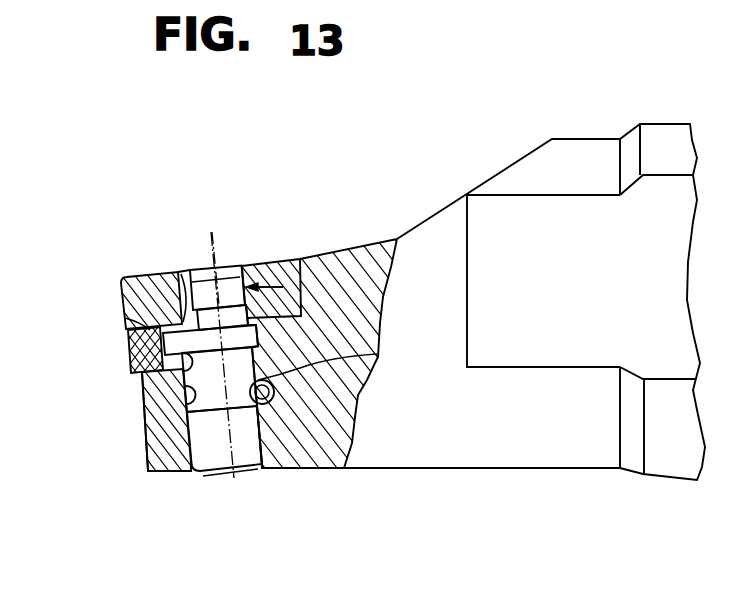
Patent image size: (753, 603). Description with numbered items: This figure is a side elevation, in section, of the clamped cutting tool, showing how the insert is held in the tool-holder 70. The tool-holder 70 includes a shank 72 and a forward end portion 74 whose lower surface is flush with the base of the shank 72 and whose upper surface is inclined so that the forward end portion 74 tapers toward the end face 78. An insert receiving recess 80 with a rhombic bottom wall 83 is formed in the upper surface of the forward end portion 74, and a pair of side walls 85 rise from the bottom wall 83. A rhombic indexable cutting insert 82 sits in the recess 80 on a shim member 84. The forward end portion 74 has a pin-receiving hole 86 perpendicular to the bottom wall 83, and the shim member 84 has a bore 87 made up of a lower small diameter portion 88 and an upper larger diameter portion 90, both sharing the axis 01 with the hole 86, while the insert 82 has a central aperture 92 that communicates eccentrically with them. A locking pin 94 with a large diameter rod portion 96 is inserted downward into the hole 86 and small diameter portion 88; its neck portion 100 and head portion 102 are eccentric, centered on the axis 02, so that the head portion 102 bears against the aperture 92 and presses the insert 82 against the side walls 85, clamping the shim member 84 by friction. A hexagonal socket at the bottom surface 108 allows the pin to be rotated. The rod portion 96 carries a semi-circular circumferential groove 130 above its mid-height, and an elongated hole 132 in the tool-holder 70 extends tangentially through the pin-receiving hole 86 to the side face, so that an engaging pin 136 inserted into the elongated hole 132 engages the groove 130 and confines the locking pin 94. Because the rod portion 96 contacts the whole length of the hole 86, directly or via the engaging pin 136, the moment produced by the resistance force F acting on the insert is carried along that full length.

The tool-holder 70 is at (539, 130).
The shank 72 is at (658, 138).
The forward end portion 74 is at (347, 247).
The end face 78 is at (148, 450).
The insert receiving recess 80 is at (128, 359).
The indexable cutting insert 82 is at (131, 277).
The bottom wall 83 is at (126, 338).
The shim member 84 is at (125, 318).
The side walls 85 is at (290, 255).
The pin-receiving hole 86 is at (198, 474).
The bore 87 is at (113, 401).
The lower small diameter portion 88 is at (140, 387).
The upper larger diameter portion 90 is at (140, 413).
The aperture 92 is at (183, 270).
The locking pin 94 is at (251, 496).
The large diameter rod portion 96 is at (232, 438).
The neck portion 100 is at (238, 263).
The head portion 102 is at (200, 268).
The center axis of neck and head portions 02 is at (210, 268).
The center axis of pin-receiving hole and bore 01 is at (234, 474).
The bottom surface 108 is at (252, 475).
The circumferential groove 130 is at (143, 421).
The elongated hole 132 is at (272, 385).
The engaging pin 136 is at (377, 354).
The resistance force F is at (267, 283).